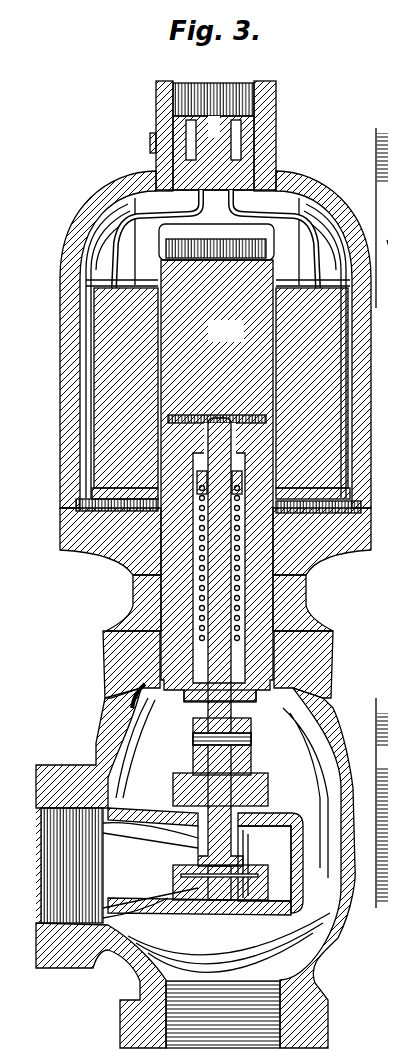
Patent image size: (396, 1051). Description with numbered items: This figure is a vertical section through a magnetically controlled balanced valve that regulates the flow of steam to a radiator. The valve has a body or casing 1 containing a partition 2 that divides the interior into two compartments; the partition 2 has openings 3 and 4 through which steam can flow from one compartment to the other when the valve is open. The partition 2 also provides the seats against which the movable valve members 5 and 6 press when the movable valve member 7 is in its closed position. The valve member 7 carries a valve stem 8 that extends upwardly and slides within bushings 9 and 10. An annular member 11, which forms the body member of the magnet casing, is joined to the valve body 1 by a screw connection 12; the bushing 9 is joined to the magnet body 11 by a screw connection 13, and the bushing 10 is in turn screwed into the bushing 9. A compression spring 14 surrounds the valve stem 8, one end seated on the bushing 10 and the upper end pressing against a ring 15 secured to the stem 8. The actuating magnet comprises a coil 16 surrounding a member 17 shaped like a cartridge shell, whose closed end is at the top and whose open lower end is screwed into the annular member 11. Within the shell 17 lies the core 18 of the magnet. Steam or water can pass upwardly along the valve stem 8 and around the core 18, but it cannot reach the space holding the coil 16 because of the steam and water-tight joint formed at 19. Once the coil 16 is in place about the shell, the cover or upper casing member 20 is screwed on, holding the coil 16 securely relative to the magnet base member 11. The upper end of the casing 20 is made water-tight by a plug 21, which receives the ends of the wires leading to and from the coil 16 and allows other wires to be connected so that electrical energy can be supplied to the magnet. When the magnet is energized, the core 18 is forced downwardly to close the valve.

The body or casing 1 is at (332, 935).
The partition 2 is at (284, 830).
The opening 3 is at (220, 898).
The opening 4 is at (238, 815).
The movable valve member 5 is at (202, 893).
The movable valve member 6 is at (197, 818).
The movable valve member 7 is at (190, 747).
The valve stem 8 is at (205, 699).
The bushing 9 is at (165, 583).
The bushing 10 is at (168, 700).
The annular member 11 is at (300, 595).
The screw connection 12 is at (288, 660).
The screw connection 13 is at (155, 641).
The compression spring 14 is at (195, 552).
The ring 15 is at (189, 477).
The coil 16 is at (100, 330).
The member in the form of a cartridge shell 17 is at (128, 185).
The core 18 is at (216, 462).
The steam and water-tight joint 19 is at (310, 547).
The cover or upper casing member 20 is at (58, 410).
The plug 21 is at (243, 130).